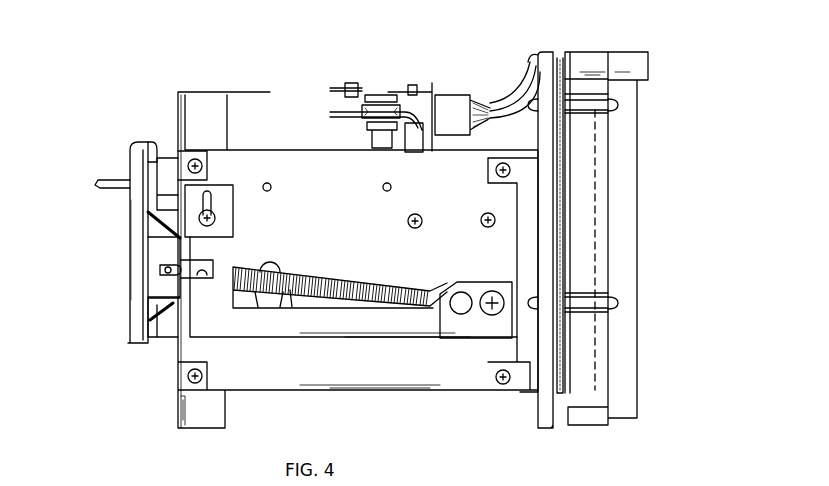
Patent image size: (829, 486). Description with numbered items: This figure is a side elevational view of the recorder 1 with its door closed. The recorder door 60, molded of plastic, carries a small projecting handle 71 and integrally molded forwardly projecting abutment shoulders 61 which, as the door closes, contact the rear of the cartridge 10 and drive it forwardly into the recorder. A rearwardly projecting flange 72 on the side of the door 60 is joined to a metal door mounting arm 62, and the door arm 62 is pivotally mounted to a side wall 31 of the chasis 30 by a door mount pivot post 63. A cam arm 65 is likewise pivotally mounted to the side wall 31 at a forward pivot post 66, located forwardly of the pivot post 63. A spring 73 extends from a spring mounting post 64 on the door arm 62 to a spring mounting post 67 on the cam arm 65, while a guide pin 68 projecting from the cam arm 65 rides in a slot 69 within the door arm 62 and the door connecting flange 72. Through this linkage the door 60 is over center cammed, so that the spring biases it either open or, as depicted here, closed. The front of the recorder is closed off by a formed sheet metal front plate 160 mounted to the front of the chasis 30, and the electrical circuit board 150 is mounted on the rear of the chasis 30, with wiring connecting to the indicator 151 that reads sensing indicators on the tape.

The recorder 1 is at (118, 100).
The cartridge 10 is at (167, 153).
The chasis 30 is at (302, 181).
The side wall 31 is at (357, 232).
The recorder door 60 is at (126, 267).
The abutment shoulders 61 is at (158, 150).
The door mounting arm 62 is at (328, 330).
The door mount pivot post 63 is at (491, 290).
The spring mounting post 64 is at (459, 308).
The cam arm 65 is at (250, 267).
The forward pivot post 66 is at (264, 304).
The spring mounting post 67 is at (236, 265).
The guide pin 68 is at (158, 270).
The slot 69 is at (188, 274).
The projecting handle 71 is at (97, 192).
The rearwardly projecting flange 72 is at (159, 324).
The spring 73 is at (397, 288).
The electrical circuit board 150 is at (587, 53).
The indicator 151 is at (383, 95).
The front plate 160 is at (175, 410).